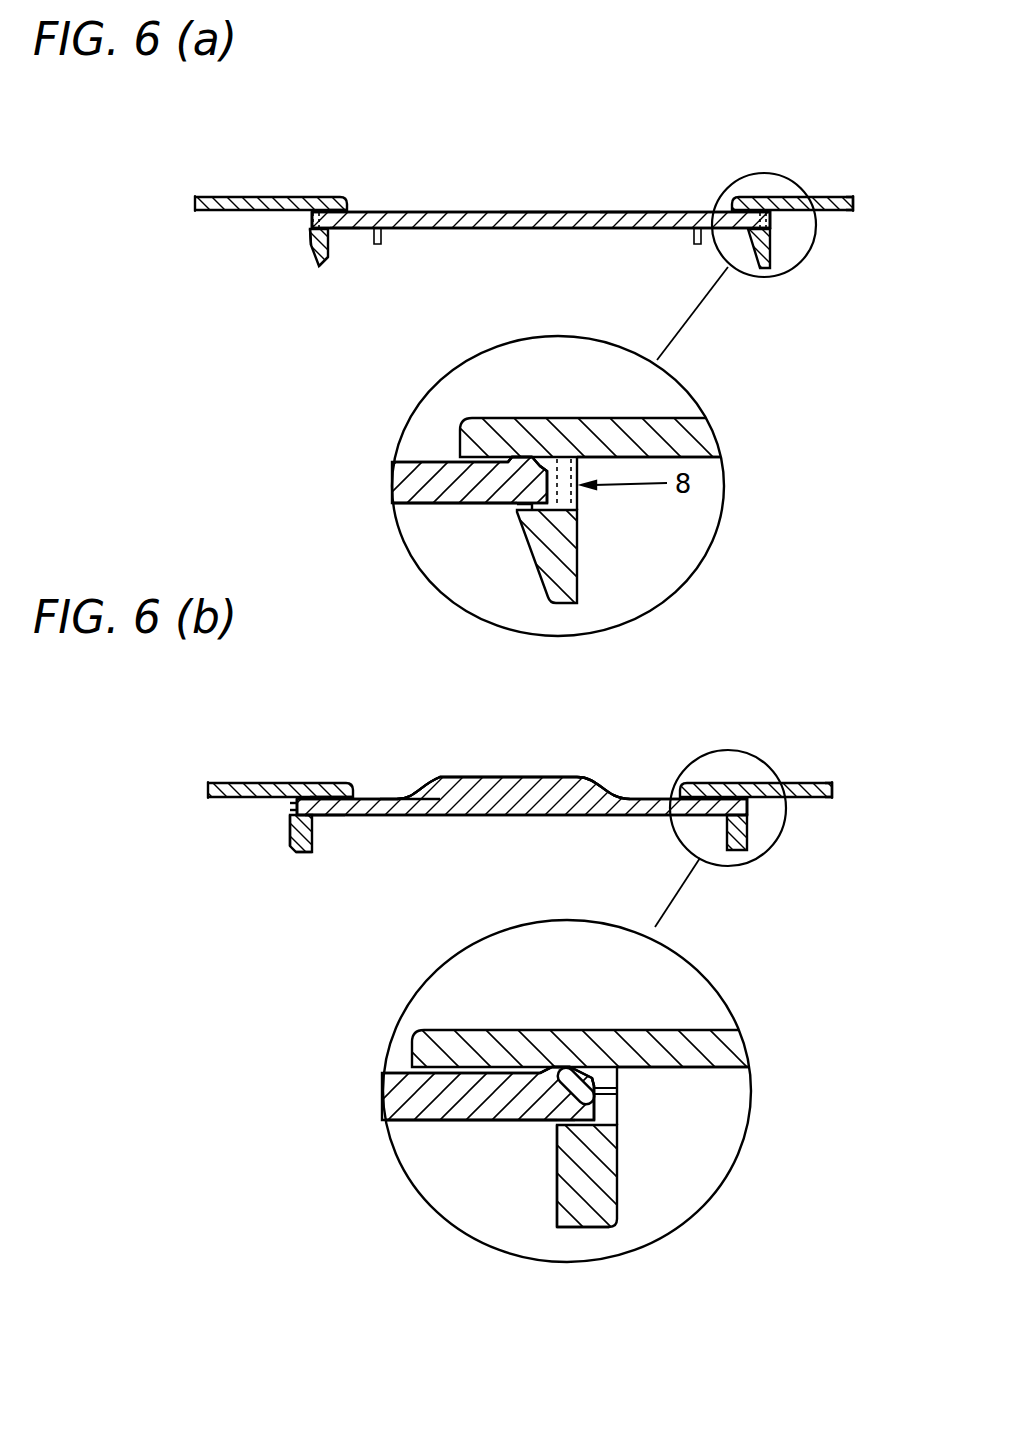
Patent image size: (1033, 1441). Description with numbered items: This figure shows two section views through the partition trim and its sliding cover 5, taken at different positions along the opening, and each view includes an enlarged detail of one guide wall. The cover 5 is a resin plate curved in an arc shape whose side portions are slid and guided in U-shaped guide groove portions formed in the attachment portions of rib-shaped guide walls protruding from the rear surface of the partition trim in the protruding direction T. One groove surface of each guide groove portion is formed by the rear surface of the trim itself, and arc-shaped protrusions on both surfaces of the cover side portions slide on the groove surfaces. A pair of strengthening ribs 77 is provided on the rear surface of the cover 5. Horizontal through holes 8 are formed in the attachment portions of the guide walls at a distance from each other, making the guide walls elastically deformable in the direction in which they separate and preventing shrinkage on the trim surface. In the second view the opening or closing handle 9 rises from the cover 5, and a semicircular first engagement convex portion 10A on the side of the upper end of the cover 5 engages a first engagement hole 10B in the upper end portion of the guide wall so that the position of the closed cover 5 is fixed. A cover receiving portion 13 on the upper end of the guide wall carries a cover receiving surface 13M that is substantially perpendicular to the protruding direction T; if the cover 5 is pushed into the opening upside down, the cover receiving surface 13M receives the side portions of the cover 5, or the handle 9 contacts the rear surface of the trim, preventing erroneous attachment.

The cover 5 is at (521, 211).
The horizontal through holes 8 is at (300, 223).
The opening or closing handle 9 is at (513, 777).
The first engagement convex portion 10A is at (290, 805).
The first engagement hole 10B is at (290, 812).
The cover receiving portion 13 is at (613, 1207).
The cover receiving surface 13M is at (588, 1229).
The strengthening ribs 77 is at (378, 246).
The protruding direction T is at (579, 1288).